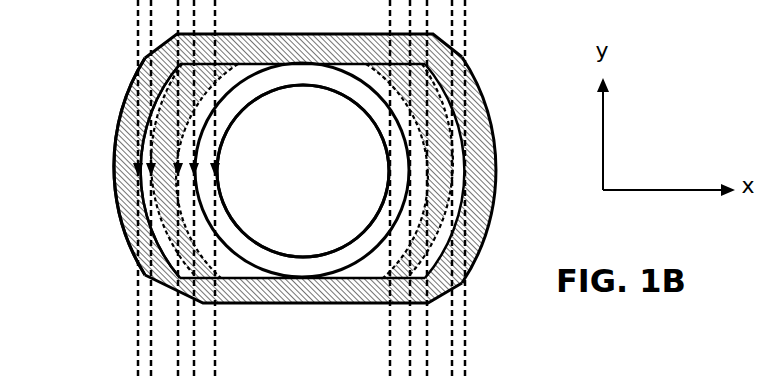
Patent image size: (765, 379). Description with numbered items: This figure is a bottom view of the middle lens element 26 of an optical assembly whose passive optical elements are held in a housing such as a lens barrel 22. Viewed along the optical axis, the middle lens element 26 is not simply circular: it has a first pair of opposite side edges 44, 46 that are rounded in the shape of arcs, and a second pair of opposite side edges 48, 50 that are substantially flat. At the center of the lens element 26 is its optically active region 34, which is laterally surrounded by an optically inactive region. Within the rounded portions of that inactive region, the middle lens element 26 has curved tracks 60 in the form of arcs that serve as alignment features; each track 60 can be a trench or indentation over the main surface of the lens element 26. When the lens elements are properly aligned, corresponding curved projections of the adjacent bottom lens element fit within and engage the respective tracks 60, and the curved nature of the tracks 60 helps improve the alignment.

The lens barrel 22 is at (116, 187).
The middle lens element 26 is at (355, 133).
The optically active region 34 is at (285, 177).
The side edge 44 is at (140, 154).
The side edge 46 is at (452, 200).
The side edge 48 is at (305, 278).
The side edge 50 is at (307, 63).
The curved tracks 60 is at (179, 238).